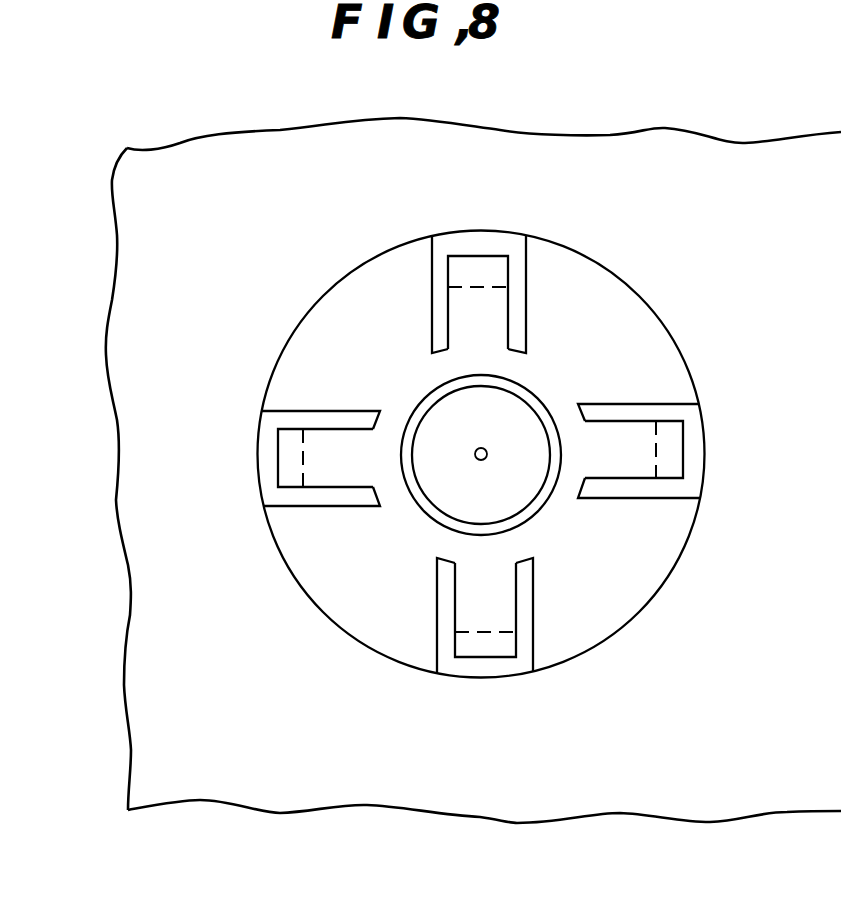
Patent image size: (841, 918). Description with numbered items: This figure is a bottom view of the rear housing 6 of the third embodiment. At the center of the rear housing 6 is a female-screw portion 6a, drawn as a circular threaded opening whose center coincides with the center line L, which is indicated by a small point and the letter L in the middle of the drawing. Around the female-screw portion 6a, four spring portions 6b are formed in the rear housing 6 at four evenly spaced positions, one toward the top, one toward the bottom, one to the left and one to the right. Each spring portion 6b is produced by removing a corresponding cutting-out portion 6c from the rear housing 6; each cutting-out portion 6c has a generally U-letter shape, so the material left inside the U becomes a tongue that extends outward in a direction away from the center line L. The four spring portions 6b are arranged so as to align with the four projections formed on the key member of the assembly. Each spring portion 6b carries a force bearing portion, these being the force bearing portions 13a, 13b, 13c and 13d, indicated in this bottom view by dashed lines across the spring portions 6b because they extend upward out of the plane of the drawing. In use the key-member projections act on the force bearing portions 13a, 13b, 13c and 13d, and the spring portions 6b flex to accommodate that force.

The rear housing 6 is at (750, 162).
The female-screw portion 6a is at (515, 387).
The spring portions 6b is at (472, 268).
The cutting-out portions 6c is at (520, 306).
The force bearing portion 13a is at (295, 495).
The force bearing portion 13b is at (670, 395).
The force bearing portion 13c is at (505, 278).
The force bearing portion 13d is at (538, 653).
The center line L is at (481, 465).